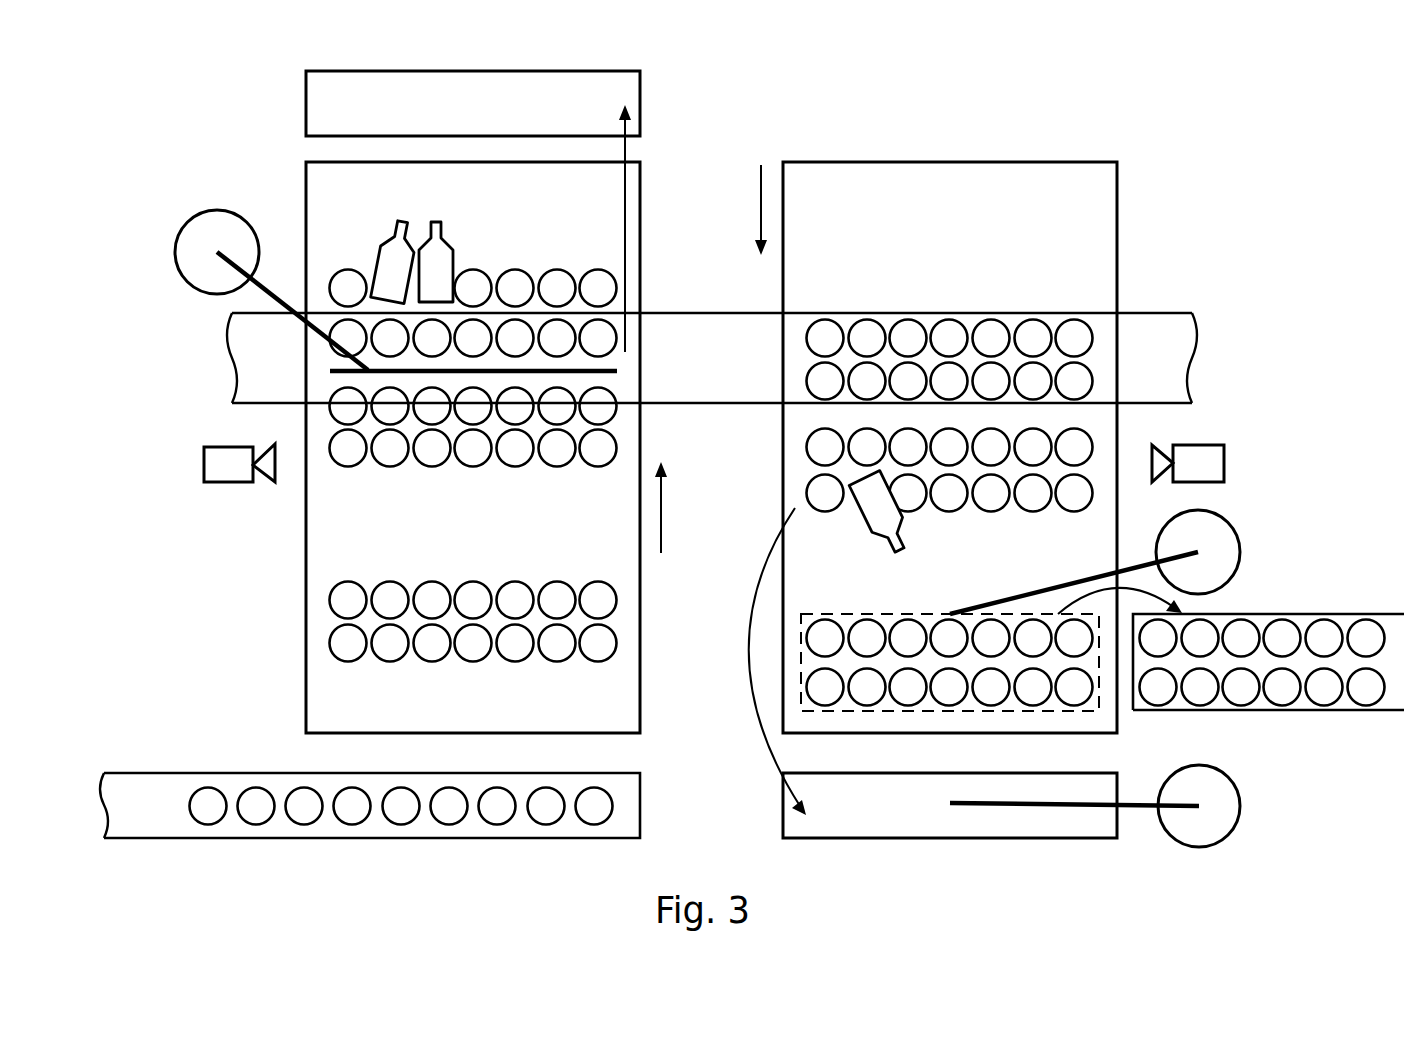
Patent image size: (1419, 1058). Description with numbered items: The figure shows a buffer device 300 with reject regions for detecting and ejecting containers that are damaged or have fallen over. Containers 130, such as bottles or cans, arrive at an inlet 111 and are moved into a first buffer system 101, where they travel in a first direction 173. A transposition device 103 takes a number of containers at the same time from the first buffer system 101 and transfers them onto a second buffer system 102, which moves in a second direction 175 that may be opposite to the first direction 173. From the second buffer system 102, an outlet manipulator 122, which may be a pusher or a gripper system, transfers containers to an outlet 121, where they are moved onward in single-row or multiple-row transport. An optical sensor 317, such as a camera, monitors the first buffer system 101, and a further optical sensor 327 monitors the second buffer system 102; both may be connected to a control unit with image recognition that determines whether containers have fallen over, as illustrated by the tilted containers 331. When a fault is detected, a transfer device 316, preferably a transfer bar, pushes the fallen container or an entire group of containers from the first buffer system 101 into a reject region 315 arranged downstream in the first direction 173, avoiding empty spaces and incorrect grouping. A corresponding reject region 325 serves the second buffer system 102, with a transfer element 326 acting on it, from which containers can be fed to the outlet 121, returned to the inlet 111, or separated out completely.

The buffer device 300 is at (210, 66).
The reject region 315 is at (306, 110).
The transfer device 316 is at (217, 210).
The foreign containers (bottles) 331 is at (453, 250).
The first buffer system 101 is at (306, 517).
The optical sensor 317 is at (204, 464).
The transposition device 103 is at (715, 313).
The second direction 175 is at (761, 224).
The first direction 173 is at (661, 492).
The second buffer system 102 is at (1119, 222).
The optical sensor 327 is at (1225, 463).
The outlet manipulator 122 is at (1241, 553).
The outlet 121 is at (1340, 711).
The gripper 326 is at (1241, 806).
The reject region 325 is at (967, 839).
The inlet 111 is at (178, 839).
The container 130 is at (250, 825).